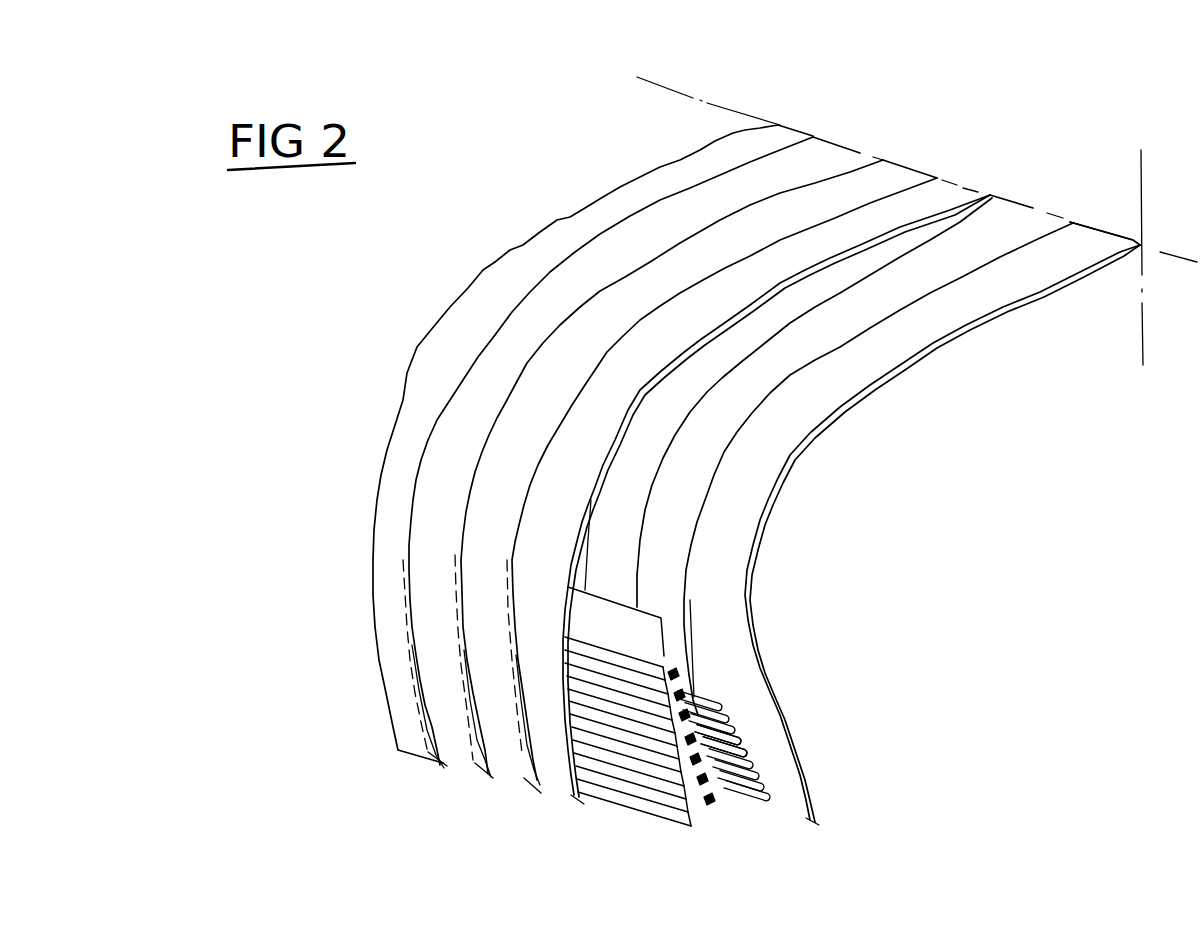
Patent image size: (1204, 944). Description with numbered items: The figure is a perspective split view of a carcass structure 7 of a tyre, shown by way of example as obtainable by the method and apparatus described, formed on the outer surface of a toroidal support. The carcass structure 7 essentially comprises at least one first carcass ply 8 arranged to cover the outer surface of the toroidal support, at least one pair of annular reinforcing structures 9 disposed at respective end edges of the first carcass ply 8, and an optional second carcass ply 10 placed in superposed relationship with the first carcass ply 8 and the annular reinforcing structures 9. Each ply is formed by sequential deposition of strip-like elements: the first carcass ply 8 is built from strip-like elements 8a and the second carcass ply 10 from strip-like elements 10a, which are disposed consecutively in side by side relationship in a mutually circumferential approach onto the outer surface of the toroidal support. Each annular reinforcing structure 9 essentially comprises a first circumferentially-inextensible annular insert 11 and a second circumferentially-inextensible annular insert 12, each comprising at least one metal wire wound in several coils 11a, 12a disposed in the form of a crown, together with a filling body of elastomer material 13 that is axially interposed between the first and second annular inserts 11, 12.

The carcass structure 7 is at (1048, 131).
The first carcass ply 8 is at (989, 318).
The strip-like elements 8a is at (1028, 220).
The annular reinforcing structures 9 is at (678, 672).
The second carcass ply 10 is at (858, 250).
The strip-like elements 10a is at (828, 156).
The first annular insert 11 is at (768, 806).
The coils 11a is at (745, 740).
The second annular insert 12 is at (605, 740).
The coils 12a is at (597, 760).
The filling body of elastomer material 13 is at (711, 806).